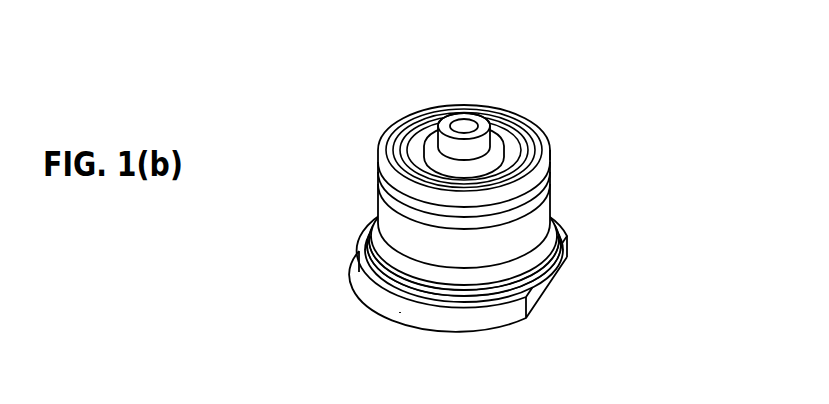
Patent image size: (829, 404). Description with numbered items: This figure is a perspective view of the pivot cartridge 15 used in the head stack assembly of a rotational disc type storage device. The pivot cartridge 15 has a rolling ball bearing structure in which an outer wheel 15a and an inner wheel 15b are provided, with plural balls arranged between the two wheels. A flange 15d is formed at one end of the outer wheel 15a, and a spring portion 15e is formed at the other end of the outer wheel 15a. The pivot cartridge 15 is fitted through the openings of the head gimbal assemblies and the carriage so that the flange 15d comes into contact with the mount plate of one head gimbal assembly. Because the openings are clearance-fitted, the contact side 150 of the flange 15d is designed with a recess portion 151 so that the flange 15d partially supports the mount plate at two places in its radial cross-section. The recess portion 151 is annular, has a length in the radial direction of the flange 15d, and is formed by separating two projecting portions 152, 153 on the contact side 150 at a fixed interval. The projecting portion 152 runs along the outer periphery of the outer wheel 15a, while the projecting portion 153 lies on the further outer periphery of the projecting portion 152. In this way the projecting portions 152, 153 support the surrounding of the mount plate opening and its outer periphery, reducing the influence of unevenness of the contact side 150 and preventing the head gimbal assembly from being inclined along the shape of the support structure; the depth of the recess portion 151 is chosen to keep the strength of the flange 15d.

The pivot cartridge 15 is at (548, 130).
The outer wheel 15a is at (555, 150).
The inner wheel 15b is at (413, 131).
The flange 15d is at (420, 318).
The spring portion 15e is at (380, 168).
The contact side 150 is at (548, 290).
The recess portion 151 is at (372, 245).
The projecting portion 152 is at (383, 294).
The projecting portion 153 is at (370, 270).